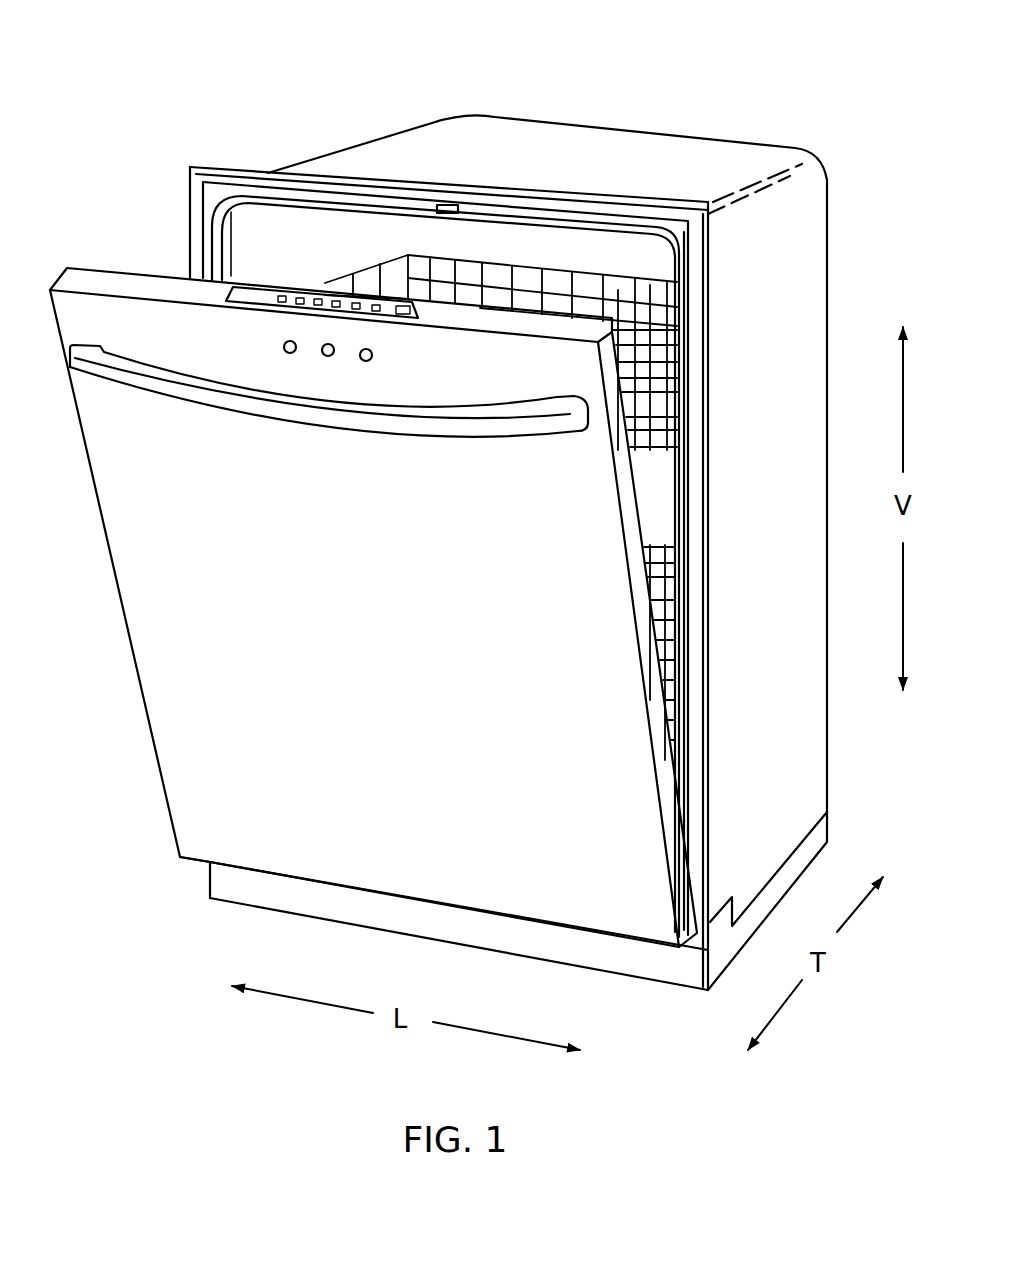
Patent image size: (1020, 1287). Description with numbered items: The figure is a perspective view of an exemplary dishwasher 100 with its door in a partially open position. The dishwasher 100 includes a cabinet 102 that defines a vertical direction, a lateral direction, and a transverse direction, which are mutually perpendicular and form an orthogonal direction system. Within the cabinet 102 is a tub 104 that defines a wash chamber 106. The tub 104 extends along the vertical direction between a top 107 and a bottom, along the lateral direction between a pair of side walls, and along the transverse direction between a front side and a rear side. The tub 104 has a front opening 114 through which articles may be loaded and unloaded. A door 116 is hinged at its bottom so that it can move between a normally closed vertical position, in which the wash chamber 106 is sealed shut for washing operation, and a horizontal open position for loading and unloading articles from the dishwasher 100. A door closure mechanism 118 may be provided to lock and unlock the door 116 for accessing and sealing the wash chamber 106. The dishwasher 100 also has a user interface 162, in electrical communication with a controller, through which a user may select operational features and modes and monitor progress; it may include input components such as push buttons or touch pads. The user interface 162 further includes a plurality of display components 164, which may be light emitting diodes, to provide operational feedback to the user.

The dishwasher 100 is at (213, 99).
The cabinet 102 is at (720, 160).
The tub 104 is at (277, 174).
The wash chamber 106 is at (385, 247).
The top 107 is at (268, 212).
The front opening 114 is at (562, 262).
The door 116 is at (157, 670).
The door closure mechanism 118 is at (448, 205).
The user interface 162 is at (134, 280).
The display components 164 is at (372, 314).